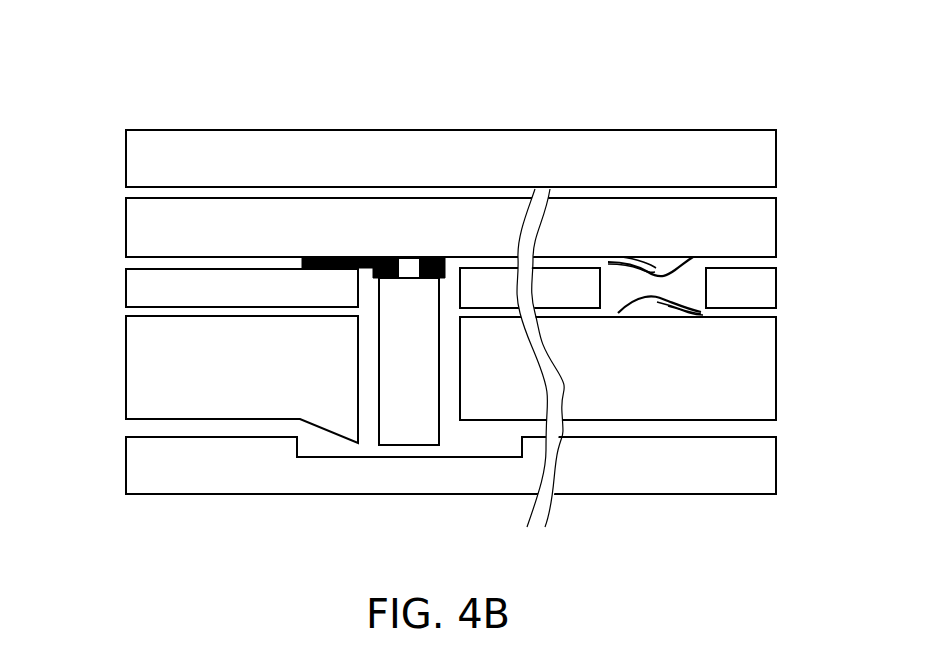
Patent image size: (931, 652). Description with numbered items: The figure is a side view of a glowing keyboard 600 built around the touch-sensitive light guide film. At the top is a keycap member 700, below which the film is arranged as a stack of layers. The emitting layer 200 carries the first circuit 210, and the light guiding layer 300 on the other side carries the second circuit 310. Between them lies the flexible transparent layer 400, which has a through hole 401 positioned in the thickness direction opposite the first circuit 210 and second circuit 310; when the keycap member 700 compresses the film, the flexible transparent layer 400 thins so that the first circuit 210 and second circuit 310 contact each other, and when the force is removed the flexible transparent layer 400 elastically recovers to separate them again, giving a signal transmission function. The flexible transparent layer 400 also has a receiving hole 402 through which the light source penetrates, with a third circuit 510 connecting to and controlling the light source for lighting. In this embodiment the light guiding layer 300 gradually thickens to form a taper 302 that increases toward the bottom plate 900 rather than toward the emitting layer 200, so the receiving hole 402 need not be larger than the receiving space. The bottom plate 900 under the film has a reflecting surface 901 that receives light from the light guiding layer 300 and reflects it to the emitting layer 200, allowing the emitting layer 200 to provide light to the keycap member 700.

The glowing keyboard 600 is at (85, 44).
The keycap member 700 is at (138, 162).
The emitting layer 200 is at (138, 233).
The first circuit 210 is at (660, 263).
The flexible transparent layer 400 is at (405, 196).
The through hole 401 is at (707, 285).
The receiving hole 402 is at (460, 297).
The third circuit 510 is at (345, 256).
The light guiding layer 300 is at (405, 432).
The taper 302 is at (358, 377).
The second circuit 310 is at (645, 310).
The bottom plate 900 is at (138, 468).
The reflecting surface 901 is at (415, 458).